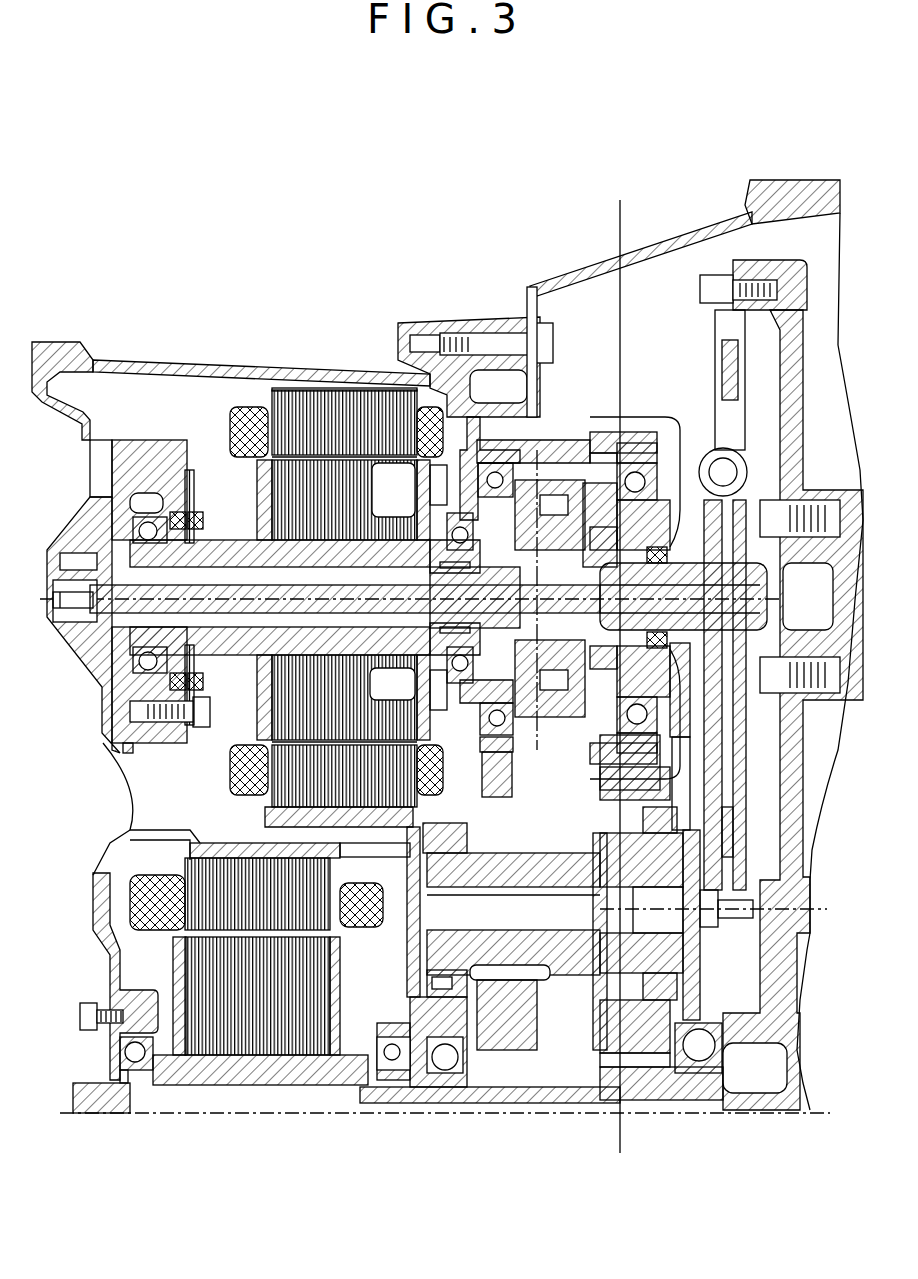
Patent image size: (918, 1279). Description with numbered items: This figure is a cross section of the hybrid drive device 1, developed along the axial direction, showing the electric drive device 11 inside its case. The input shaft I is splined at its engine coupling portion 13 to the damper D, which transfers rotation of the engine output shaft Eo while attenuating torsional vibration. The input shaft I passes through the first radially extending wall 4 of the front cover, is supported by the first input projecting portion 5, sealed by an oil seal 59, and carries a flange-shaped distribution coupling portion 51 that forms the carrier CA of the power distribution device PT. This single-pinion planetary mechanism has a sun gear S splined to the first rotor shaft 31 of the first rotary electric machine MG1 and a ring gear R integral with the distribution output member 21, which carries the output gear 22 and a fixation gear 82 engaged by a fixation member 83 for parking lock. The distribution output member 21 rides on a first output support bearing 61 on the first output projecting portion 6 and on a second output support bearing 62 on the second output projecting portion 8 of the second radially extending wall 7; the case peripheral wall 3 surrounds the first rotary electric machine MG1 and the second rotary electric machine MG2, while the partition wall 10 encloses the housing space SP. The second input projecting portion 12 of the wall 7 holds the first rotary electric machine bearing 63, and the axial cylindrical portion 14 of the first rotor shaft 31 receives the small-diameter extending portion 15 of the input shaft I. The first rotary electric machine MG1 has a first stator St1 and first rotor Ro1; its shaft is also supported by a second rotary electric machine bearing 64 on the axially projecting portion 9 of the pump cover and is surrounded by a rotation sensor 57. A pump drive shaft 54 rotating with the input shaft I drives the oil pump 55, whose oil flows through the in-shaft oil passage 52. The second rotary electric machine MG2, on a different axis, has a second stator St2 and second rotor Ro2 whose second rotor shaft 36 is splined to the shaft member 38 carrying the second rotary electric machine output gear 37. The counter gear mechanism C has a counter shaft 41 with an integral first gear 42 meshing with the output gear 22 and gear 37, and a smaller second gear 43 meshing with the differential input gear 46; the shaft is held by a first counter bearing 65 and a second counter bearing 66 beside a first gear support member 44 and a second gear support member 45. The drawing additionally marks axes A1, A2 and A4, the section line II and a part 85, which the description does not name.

The hybrid drive device 1 is at (176, 166).
The case peripheral wall 3 is at (327, 377).
The first radially extending wall 4 is at (683, 470).
The first input projecting portion 5 is at (590, 520).
The first output projecting portion 6 is at (586, 478).
The second radially extending wall 7 is at (472, 430).
The second output projecting portion 8 is at (478, 510).
The axially projecting portion 9 is at (76, 490).
The partition wall 10 is at (632, 430).
The electric drive device 11 is at (503, 270).
The second input projecting portion 12 is at (440, 490).
The engine coupling portion 13 is at (785, 515).
The axial cylindrical portion 14 is at (440, 672).
The extending portion 15 is at (492, 590).
The distribution output member 21 is at (570, 445).
The output gear 22 is at (645, 432).
The first rotor shaft 31 is at (212, 712).
The second rotor shaft 36 is at (272, 1085).
The second rotary electric machine output gear 37 is at (650, 1062).
The shaft member 38 is at (455, 1103).
The counter shaft 41 is at (680, 955).
The first gear 42 is at (680, 762).
The second gear 43 is at (545, 840).
The first gear support member 44 is at (680, 790).
The second gear support member 45 is at (500, 853).
The differential input gear 46 is at (508, 1052).
The distribution coupling portion 51 is at (585, 722).
The in-shaft oil passage 52 is at (618, 599).
The pump drive shaft 54 is at (230, 583).
The oil pump 55 is at (85, 620).
The rotation sensor 57 is at (160, 490).
The oil seal 59 is at (752, 599).
The first output support bearing 61 is at (740, 450).
The second output support bearing 62 is at (482, 722).
The first rotary electric machine bearing 63 is at (447, 525).
The second rotary electric machine bearing 64 is at (132, 530).
The first counter bearing 65 is at (680, 992).
The second counter bearing 66 is at (427, 983).
The fixation gear 82 is at (493, 430).
The fixation member 83 is at (508, 795).
The bearing support 85 is at (505, 762).
The first rotary electric machine MG1 is at (300, 390).
The second rotary electric machine MG2 is at (135, 862).
The first stator St1 is at (228, 428).
The second stator St2 is at (127, 892).
The first rotor Ro1 is at (255, 468).
The second rotor Ro2 is at (170, 972).
The power distribution device PT is at (548, 438).
The damper D is at (705, 350).
The ring gear R is at (580, 455).
The sun gear S is at (525, 652).
The carrier CA is at (600, 760).
The housing space SP is at (553, 982).
The counter gear mechanism C is at (557, 1062).
The engine output shaft Eo is at (826, 480).
The input shaft I is at (772, 588).
The section line II- II is at (620, 200).
The first axis A1 is at (441, 600).
The second axis A2 is at (463, 1113).
The fourth axis A4 is at (731, 909).